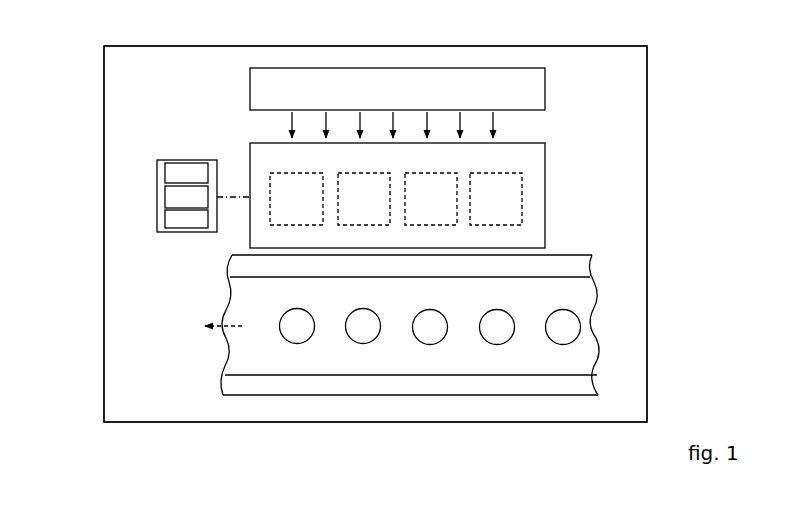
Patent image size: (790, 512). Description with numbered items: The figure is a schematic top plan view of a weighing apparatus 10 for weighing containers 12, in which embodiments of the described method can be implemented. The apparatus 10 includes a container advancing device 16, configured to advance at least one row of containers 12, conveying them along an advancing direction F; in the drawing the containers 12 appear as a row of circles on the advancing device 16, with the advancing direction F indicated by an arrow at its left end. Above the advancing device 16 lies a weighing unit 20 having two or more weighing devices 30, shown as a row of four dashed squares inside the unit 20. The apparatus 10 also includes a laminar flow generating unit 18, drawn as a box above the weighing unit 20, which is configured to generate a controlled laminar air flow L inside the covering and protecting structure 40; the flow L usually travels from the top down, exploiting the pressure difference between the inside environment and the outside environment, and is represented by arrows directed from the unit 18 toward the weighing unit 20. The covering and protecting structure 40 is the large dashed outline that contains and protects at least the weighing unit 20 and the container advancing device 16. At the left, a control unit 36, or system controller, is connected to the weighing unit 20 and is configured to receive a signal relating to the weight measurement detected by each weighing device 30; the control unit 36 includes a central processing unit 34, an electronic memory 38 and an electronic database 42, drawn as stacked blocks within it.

The weighing apparatus 10 is at (68, 92).
The containers 12 is at (363, 328).
The container advancing device 16 is at (580, 292).
The laminar flow generating unit 18 is at (528, 82).
The weighing unit 20 is at (548, 167).
The weighing devices 30 is at (284, 176).
The central processing unit 34 is at (187, 172).
The control unit 36 is at (157, 172).
The electronic memory 38 is at (178, 197).
The covering and protecting structure 40 is at (153, 426).
The electronic database 42 is at (187, 219).
The laminar air flow L is at (290, 120).
The advancing direction F is at (218, 330).